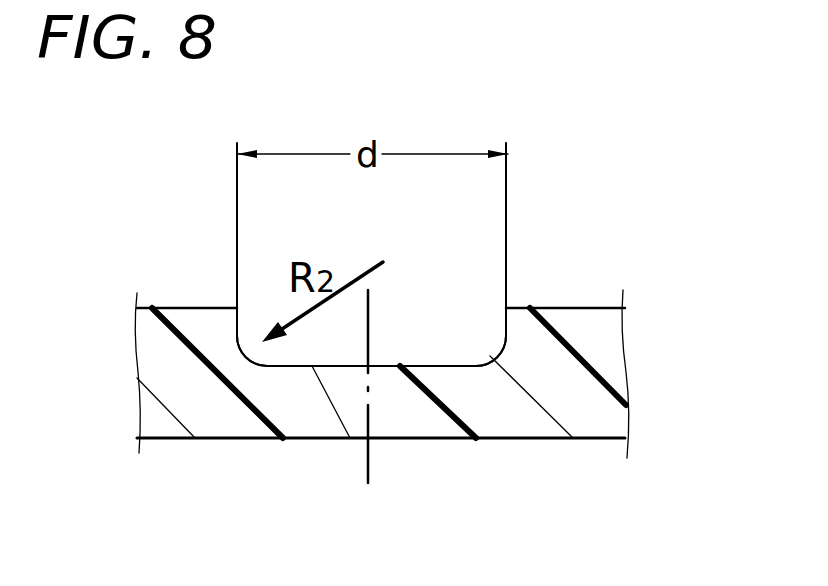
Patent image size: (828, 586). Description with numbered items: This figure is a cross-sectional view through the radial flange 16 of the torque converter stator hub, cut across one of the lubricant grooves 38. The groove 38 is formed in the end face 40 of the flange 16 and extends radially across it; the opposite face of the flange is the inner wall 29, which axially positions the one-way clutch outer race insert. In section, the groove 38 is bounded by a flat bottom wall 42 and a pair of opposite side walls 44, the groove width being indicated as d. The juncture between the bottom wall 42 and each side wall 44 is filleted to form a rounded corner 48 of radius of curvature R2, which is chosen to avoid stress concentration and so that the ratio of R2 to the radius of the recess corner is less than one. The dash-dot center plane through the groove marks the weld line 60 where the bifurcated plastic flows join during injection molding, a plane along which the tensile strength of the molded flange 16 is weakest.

The annular flange 16 is at (578, 392).
The inner wall 29 is at (592, 438).
The lubricant groove 38 is at (392, 345).
The end face 40 is at (597, 310).
The bottom wall 42 is at (335, 368).
The side walls 44 is at (234, 318).
The rounded corner 48 is at (250, 363).
The weld line 60 is at (370, 468).